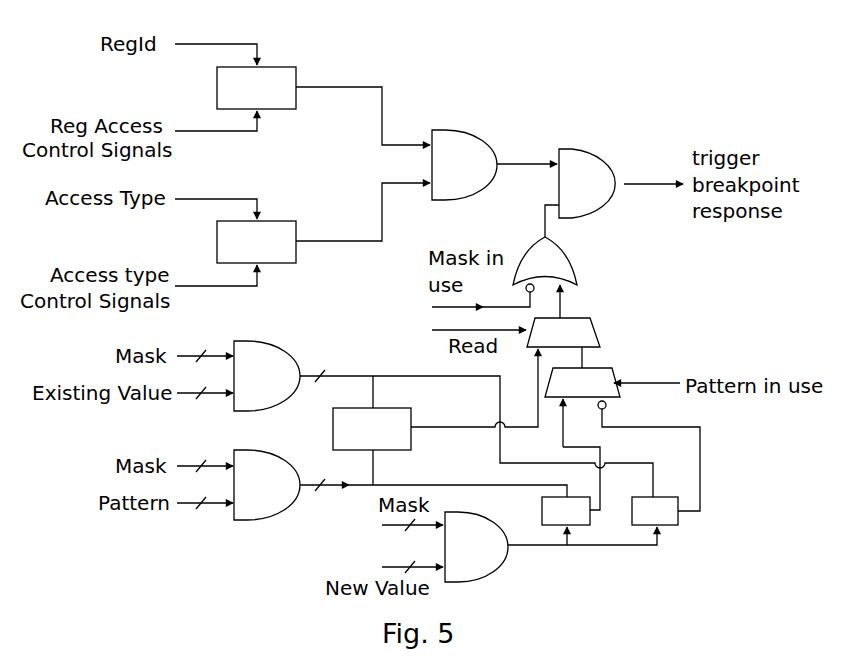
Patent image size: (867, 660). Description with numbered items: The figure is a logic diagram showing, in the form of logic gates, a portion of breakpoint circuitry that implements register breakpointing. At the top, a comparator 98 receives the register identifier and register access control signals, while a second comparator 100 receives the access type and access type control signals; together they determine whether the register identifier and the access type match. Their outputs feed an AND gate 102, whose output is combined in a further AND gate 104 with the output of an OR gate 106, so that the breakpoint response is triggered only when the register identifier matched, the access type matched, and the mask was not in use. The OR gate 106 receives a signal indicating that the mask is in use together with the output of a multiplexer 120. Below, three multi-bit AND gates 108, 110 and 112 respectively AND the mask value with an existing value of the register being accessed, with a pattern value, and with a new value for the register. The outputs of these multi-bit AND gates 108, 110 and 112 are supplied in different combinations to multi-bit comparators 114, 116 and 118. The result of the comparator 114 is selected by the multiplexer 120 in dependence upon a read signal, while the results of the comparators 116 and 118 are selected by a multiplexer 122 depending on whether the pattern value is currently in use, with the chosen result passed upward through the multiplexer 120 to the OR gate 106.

The comparator 98 is at (296, 72).
The comparator 100 is at (296, 226).
The AND gate 102 is at (490, 118).
The AND gate 104 is at (618, 138).
The OR gate 106 is at (570, 262).
The multi-bit AND gate 108 is at (283, 341).
The multi-bit AND gate 110 is at (256, 520).
The multi-bit AND gate 112 is at (502, 565).
The multi-bit comparator 114 is at (411, 416).
The multi-bit comparator 116 is at (578, 525).
The multi-bit comparator 118 is at (678, 518).
The multiplexer 120 is at (597, 331).
The multiplexer 122 is at (616, 378).